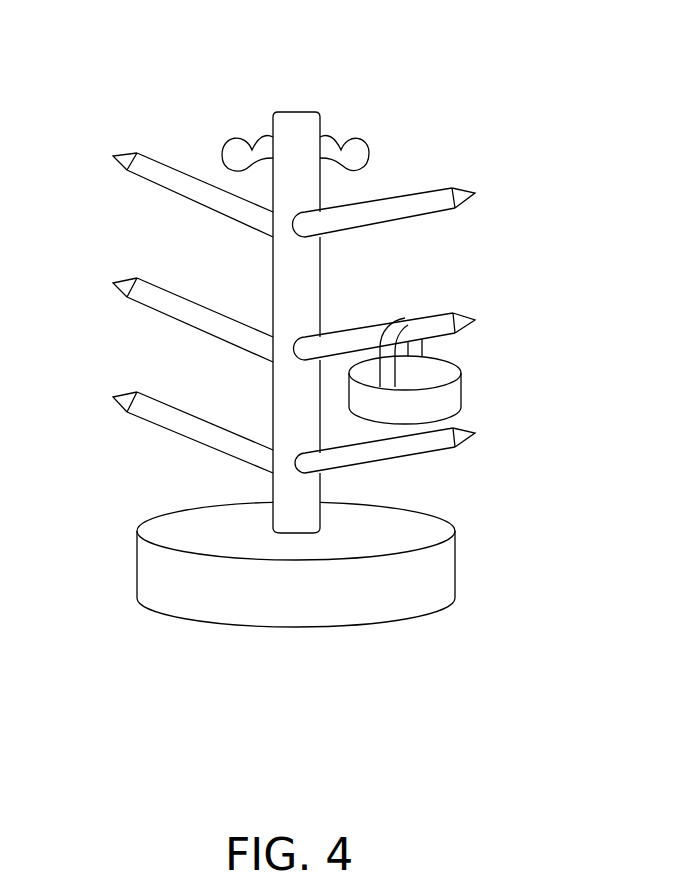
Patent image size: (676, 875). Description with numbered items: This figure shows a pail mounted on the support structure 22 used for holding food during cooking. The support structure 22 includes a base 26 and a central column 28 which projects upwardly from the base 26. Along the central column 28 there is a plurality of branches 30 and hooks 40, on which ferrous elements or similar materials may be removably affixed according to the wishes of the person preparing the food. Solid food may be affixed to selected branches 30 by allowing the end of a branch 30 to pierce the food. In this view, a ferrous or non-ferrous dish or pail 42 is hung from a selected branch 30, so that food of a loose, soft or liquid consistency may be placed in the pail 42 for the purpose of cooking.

The support structure 22 is at (297, 98).
The base 26 is at (437, 562).
The central column 28 is at (290, 513).
The branches 30 is at (117, 156).
The hooks 40 is at (253, 148).
The pail 42 is at (453, 395).